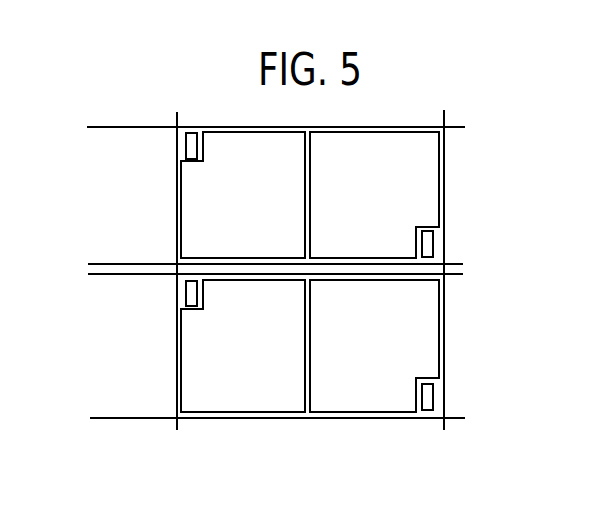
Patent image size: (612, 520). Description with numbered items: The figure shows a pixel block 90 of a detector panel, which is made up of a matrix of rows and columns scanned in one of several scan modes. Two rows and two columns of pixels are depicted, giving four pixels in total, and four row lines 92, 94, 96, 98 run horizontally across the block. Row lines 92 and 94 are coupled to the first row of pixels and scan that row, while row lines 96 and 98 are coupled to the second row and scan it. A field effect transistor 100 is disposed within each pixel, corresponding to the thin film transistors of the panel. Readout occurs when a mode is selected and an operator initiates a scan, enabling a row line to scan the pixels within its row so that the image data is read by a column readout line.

The pixel block 90 is at (446, 198).
The row line 92 is at (92, 126).
The row line 94 is at (88, 264).
The row line 96 is at (88, 274).
The row line 98 is at (90, 418).
The field effect transistor 100 is at (191, 150).